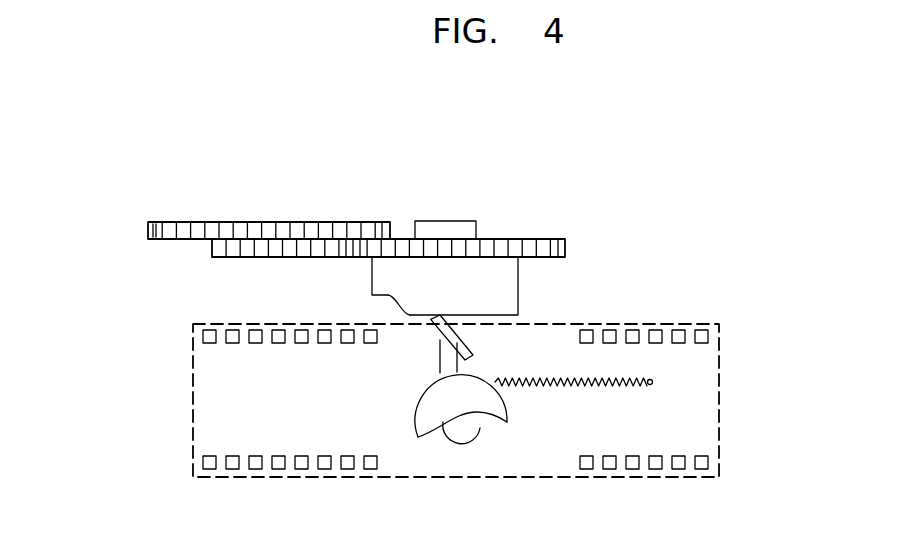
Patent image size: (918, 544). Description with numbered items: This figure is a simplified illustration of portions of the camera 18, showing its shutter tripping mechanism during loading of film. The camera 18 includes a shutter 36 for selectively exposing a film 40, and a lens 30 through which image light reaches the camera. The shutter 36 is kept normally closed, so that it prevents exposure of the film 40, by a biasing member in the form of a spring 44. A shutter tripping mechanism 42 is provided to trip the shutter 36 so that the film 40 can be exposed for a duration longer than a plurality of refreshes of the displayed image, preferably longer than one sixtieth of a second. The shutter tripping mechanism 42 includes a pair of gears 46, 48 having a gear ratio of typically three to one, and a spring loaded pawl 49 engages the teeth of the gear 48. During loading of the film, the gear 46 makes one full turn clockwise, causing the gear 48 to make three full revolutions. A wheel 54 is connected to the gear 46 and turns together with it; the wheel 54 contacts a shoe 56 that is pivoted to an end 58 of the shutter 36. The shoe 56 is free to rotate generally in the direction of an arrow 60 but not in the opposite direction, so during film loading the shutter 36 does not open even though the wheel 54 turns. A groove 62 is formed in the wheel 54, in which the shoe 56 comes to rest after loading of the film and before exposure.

The camera 18 is at (655, 258).
The lens 30 is at (477, 440).
The shutter 36 is at (423, 398).
The film 40 is at (706, 385).
The shutter tripping mechanism 42 is at (320, 198).
The spring 44 is at (623, 384).
The gear 46 is at (513, 247).
The gear 48 is at (293, 258).
The spring loaded pawl 49 is at (148, 227).
The wheel 54 is at (512, 282).
The shoe 56 is at (457, 340).
The end 58 is at (440, 350).
The arrow 60 is at (434, 298).
The groove 62 is at (385, 300).